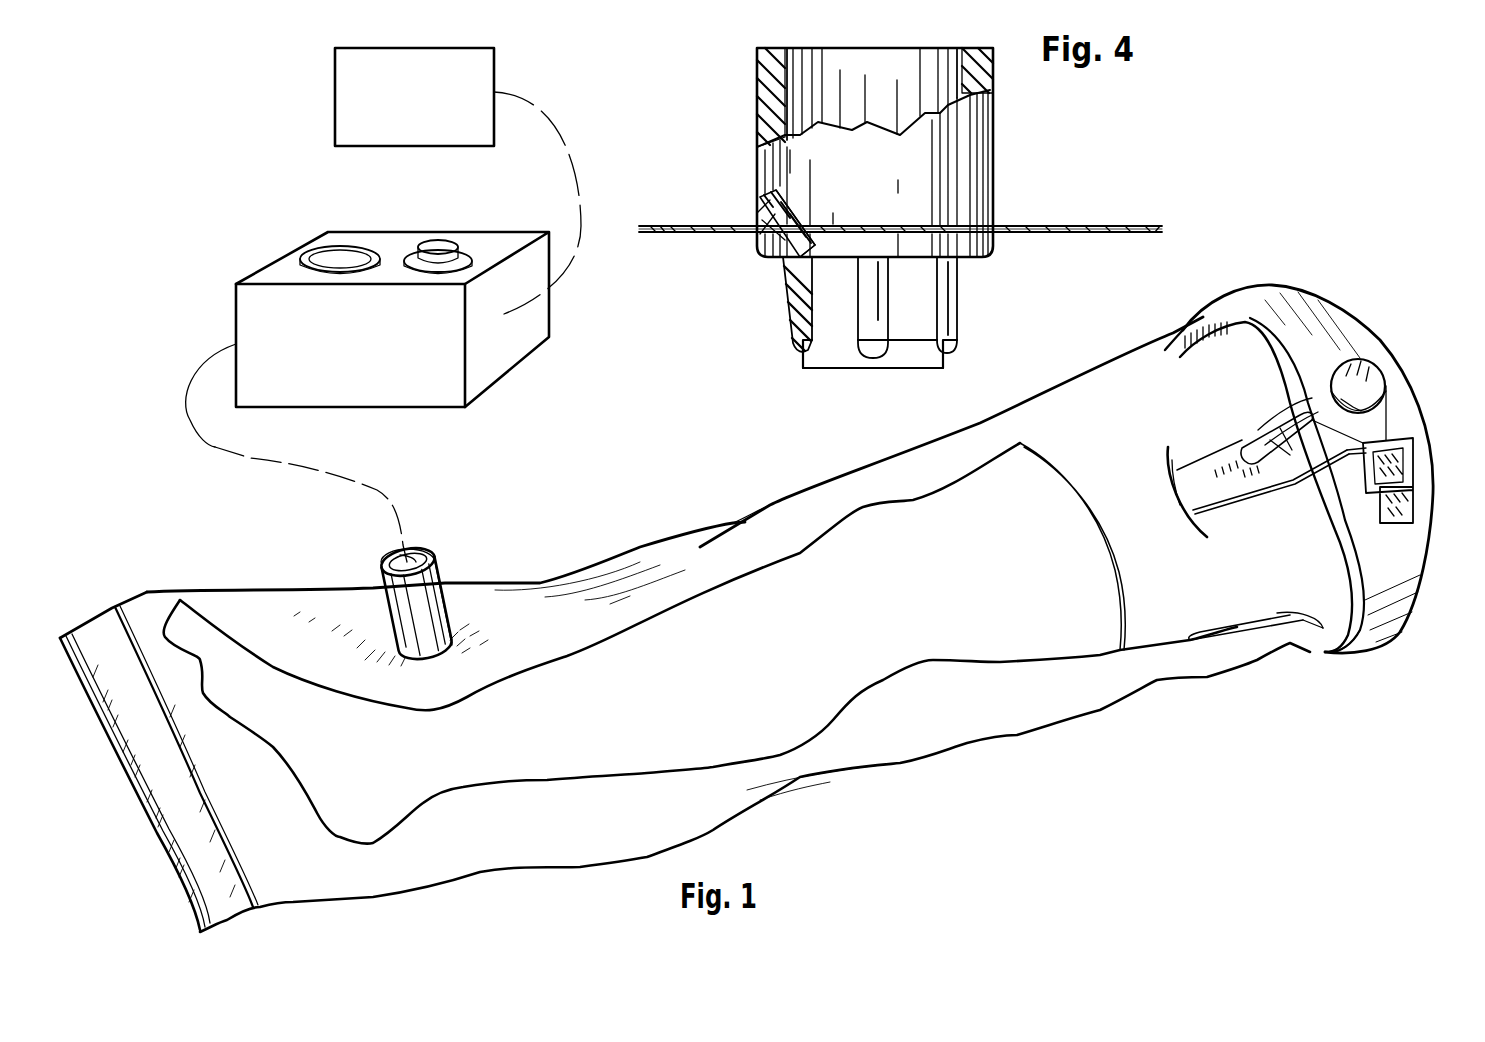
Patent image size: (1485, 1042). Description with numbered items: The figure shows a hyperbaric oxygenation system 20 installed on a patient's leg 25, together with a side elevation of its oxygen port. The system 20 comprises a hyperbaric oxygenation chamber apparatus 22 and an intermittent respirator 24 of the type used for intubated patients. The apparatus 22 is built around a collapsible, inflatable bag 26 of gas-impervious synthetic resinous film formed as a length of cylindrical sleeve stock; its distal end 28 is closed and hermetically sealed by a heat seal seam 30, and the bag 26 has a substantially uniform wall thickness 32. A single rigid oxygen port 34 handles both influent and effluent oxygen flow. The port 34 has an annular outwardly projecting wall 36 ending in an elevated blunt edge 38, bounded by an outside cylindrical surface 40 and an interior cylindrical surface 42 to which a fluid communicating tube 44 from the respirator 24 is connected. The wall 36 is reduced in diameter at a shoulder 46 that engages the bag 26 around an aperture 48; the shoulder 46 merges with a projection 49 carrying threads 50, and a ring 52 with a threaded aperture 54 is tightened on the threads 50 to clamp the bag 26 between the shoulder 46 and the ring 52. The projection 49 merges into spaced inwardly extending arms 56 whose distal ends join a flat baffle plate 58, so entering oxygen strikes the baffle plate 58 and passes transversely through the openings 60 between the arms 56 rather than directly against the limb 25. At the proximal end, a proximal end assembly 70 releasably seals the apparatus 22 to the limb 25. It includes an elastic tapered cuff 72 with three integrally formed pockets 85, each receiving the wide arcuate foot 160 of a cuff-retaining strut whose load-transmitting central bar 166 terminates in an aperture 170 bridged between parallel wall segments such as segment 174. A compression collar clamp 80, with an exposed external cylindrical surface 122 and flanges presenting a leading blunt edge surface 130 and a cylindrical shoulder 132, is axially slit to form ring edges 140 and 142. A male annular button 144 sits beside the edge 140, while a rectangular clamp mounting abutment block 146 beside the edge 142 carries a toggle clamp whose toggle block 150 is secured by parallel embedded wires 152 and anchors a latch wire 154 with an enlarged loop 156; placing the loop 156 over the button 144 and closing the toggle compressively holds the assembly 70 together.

In FIG. 1, the hyperbaric oxygenation system 20 is at (532, 514).
In FIG. 1, the hyperbaric oxygenation chamber apparatus 22 is at (1213, 310).
In FIG. 1, the intermittent respirator 24 is at (237, 306).
In FIG. 1, the leg 25 is at (976, 589).
In FIG. 4, the bag 26 is at (706, 229).
In FIG. 1, the bag 26 is at (770, 508).
In FIG. 1, the distal end 28 is at (140, 600).
In FIG. 4, the heat seal seam 30 is at (714, 224).
In FIG. 1, the heat seal seam 30 is at (205, 772).
In FIG. 4, the wall thickness 32 is at (720, 234).
In FIG. 1, the oxygen port 34 is at (443, 568).
In FIG. 4, the annular outwardly projecting wall 36 is at (993, 73).
In FIG. 4, the elevated blunt edge 38 is at (990, 72).
In FIG. 1, the elevated blunt edge 38 is at (382, 558).
In FIG. 4, the outside cylindrical surface 40 is at (993, 150).
In FIG. 1, the outside cylindrical surface 40 is at (406, 614).
In FIG. 4, the interior cylindrical surface 42 is at (940, 75).
In FIG. 1, the interior cylindrical surface 42 is at (418, 555).
In FIG. 1, the fluid communicating tube 44 is at (408, 555).
In FIG. 4, the shoulder 46 is at (764, 240).
In FIG. 4, the aperture 48 is at (795, 218).
In FIG. 4, the projection 49 is at (806, 238).
In FIG. 4, the threads 50 is at (772, 258).
In FIG. 4, the ring 52 is at (993, 255).
In FIG. 4, the threaded aperture 54 is at (812, 252).
In FIG. 4, the arms 56 is at (789, 320).
In FIG. 4, the baffle plate 58 is at (897, 368).
In FIG. 4, the openings 60 is at (790, 340).
In FIG. 1, the proximal end assembly 70 is at (1317, 292).
In FIG. 1, the cuff 72 is at (1084, 435).
In FIG. 1, the compression collar clamp 80 is at (1330, 330).
In FIG. 1, the pockets 85 is at (1170, 447).
In FIG. 1, the exposed external cylindrical surface 122 is at (1272, 293).
In FIG. 1, the leading blunt edge surface 130 is at (1368, 540).
In FIG. 1, the cylindrical shoulder 132 is at (1350, 520).
In FIG. 1, the ring edge 140 is at (1425, 445).
In FIG. 1, the ring edge 142 is at (1320, 470).
In FIG. 1, the male annular button 144 is at (1305, 390).
In FIG. 1, the clamp mounting abutment block 146 is at (1400, 400).
In FIG. 1, the toggle block 150 is at (1408, 605).
In FIG. 1, the embedded wires 152 is at (1350, 480).
In FIG. 1, the latch wire 154 is at (1412, 430).
In FIG. 1, the enlarged loop 156 is at (1290, 410).
In FIG. 1, the shoe 160 is at (1178, 490).
In FIG. 1, the central bar 166 is at (1198, 486).
In FIG. 1, the aperture 170 is at (1283, 478).
In FIG. 1, the wall segment 174 is at (1248, 440).